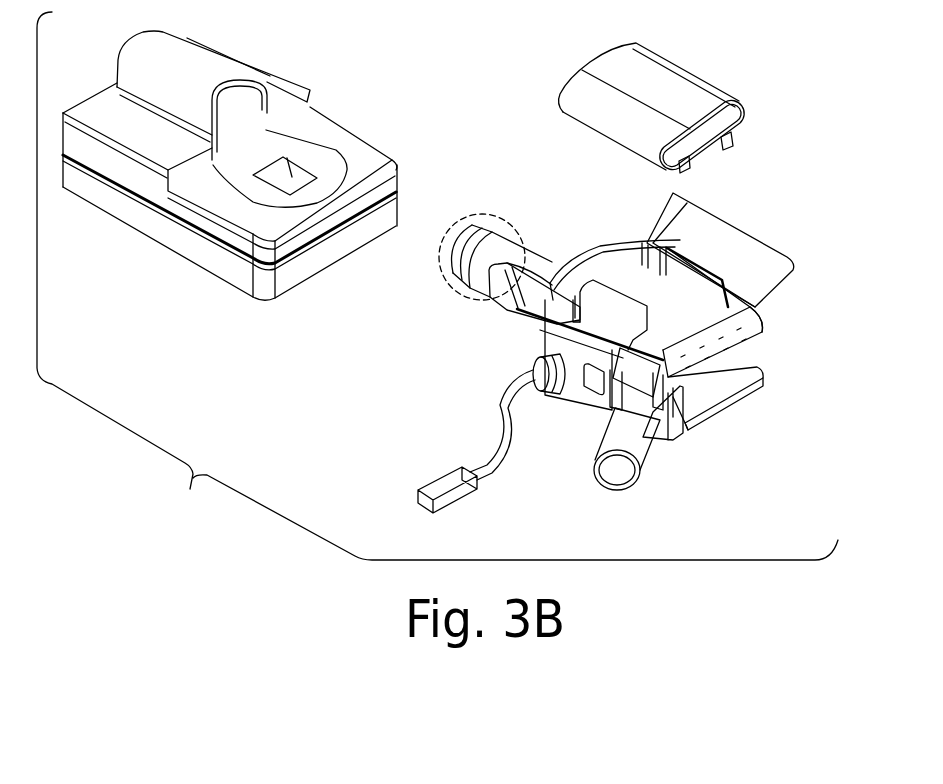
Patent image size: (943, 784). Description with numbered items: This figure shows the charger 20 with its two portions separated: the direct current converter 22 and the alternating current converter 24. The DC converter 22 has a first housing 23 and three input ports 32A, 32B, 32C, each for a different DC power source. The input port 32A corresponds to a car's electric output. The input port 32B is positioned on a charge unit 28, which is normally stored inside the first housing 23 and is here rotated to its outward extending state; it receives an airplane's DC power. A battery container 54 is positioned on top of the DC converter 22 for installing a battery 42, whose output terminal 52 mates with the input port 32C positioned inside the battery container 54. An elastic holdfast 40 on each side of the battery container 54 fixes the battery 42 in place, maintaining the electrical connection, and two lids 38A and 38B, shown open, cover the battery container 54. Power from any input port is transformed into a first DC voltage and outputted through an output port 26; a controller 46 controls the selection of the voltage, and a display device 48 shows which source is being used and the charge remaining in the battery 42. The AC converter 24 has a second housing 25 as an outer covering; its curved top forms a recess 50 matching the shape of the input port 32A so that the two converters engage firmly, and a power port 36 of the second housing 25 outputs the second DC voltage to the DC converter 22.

The charger 20 is at (437, 286).
The direct current (DC) converter 22 is at (693, 424).
The first housing 23 is at (748, 393).
The alternating current (AC) converter 24 is at (373, 160).
The second housing 25 is at (158, 226).
The output port 26 is at (420, 490).
The charge unit 28 is at (651, 449).
The input port 32A is at (447, 282).
The input port 32B is at (620, 473).
The input port 32C is at (761, 338).
The power port 36 is at (293, 180).
The lid 38A is at (530, 300).
The lid 38B is at (783, 268).
The elastic holdfast 40 is at (608, 293).
The battery 42 is at (618, 73).
The controller 46 is at (542, 363).
The display device 48 is at (598, 383).
The recess 50 is at (220, 120).
The output terminal 52 is at (735, 140).
The battery container 54 is at (647, 295).